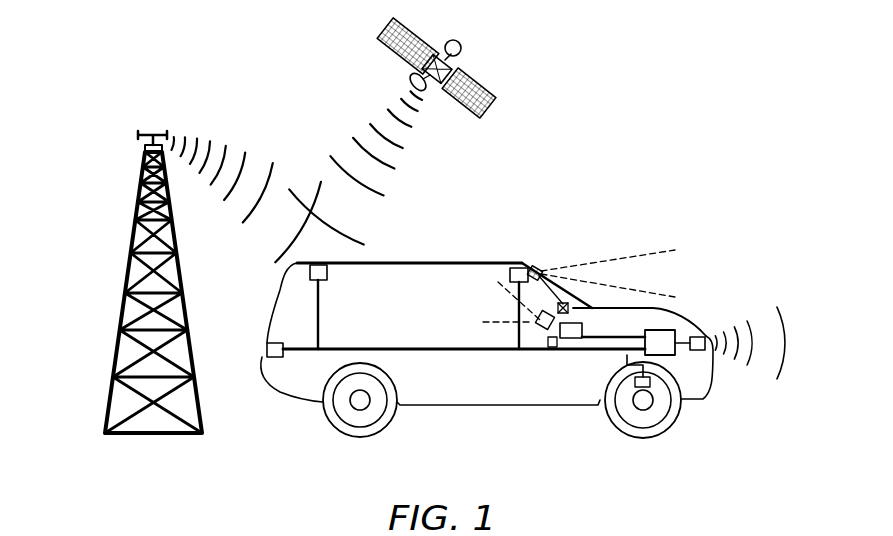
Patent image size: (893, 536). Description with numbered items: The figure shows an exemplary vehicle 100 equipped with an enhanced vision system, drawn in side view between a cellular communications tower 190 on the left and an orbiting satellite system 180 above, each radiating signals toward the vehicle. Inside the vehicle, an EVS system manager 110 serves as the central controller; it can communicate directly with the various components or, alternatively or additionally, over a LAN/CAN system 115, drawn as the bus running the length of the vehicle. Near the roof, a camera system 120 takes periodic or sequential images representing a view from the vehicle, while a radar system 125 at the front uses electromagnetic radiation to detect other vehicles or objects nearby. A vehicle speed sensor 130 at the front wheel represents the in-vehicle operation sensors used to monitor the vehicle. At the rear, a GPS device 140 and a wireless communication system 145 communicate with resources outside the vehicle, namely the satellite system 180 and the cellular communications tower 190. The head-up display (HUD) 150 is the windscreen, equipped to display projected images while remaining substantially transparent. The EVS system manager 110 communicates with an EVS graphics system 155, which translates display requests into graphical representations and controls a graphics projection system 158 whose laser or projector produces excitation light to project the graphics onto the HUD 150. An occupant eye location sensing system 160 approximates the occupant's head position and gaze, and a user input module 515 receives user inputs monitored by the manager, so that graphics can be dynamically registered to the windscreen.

The vehicle 100 is at (455, 262).
The EVS system manager 110 is at (672, 353).
The LAN/CAN system 115 is at (350, 348).
The camera system 120 is at (520, 266).
The radar system 125 is at (706, 338).
The vehicle speed sensor 130 is at (650, 383).
The GPS device 140 is at (265, 351).
The wireless communication system 145 is at (310, 272).
The head-up display (HUD) 150 is at (583, 300).
The EVS graphics system 155 is at (570, 340).
The graphics projection system 158 is at (565, 303).
The occupant eye location sensing system 160 is at (540, 330).
The satellite system 180 is at (410, 80).
The cellular communications tower 190 is at (127, 253).
The user input module (UIM) 515 is at (553, 348).